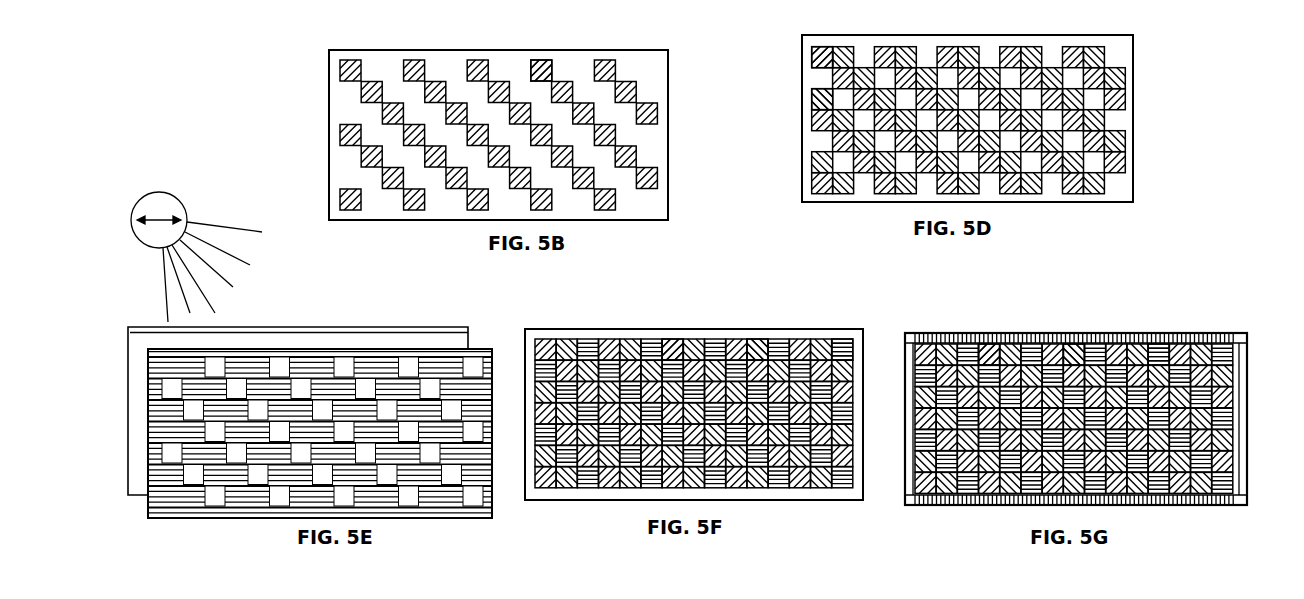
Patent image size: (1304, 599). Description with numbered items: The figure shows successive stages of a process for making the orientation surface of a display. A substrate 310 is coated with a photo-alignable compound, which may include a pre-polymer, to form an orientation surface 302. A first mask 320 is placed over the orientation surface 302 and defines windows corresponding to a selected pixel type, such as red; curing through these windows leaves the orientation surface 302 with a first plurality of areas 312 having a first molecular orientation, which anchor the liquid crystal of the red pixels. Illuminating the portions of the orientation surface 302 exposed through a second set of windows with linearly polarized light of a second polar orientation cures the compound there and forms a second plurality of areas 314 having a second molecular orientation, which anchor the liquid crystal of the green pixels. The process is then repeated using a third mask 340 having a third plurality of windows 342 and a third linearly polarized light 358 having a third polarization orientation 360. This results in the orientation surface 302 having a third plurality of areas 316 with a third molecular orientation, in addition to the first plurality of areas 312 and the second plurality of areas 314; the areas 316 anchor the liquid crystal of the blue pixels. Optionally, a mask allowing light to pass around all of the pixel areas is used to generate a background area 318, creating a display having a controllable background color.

In FIG. 5B, the orientation surface 302 is at (329, 160).
In FIG. 5D, the orientation surface 302 is at (802, 158).
In FIG. 5E, the orientation surface 302 is at (128, 332).
In FIG. 5F, the orientation surface 302 is at (527, 358).
In FIG. 5G, the orientation surface 302 is at (907, 337).
In FIG. 5B, the substrate 310 is at (498, 109).
In FIG. 5E, the substrate 310 is at (320, 400).
In FIG. 5F, the substrate 310 is at (694, 384).
In FIG. 5G, the substrate 310 is at (1066, 386).
In FIG. 5B, the first plurality of areas 312 is at (541, 58).
In FIG. 5D, the first plurality of areas 312 is at (814, 57).
In FIG. 5F, the first plurality of areas 312 is at (667, 339).
In FIG. 5G, the first plurality of areas 312 is at (993, 342).
In FIG. 5D, the second plurality of areas 314 is at (812, 99).
In FIG. 5F, the second plurality of areas 314 is at (757, 339).
In FIG. 5G, the second plurality of areas 314 is at (1060, 342).
In FIG. 5F, the third plurality of areas 316 is at (843, 339).
In FIG. 5G, the third plurality of areas 316 is at (1158, 342).
In FIG. 5G, the background area 318 is at (1233, 342).
In FIG. 5D, the first mask 320 is at (937, 97).
In FIG. 5E, the third mask 340 is at (378, 344).
In FIG. 5E, the third plurality of windows 342 is at (413, 373).
In FIG. 5E, the third linearly polarized light 358 is at (196, 241).
In FIG. 5E, the third polarization orientation 360 is at (165, 213).